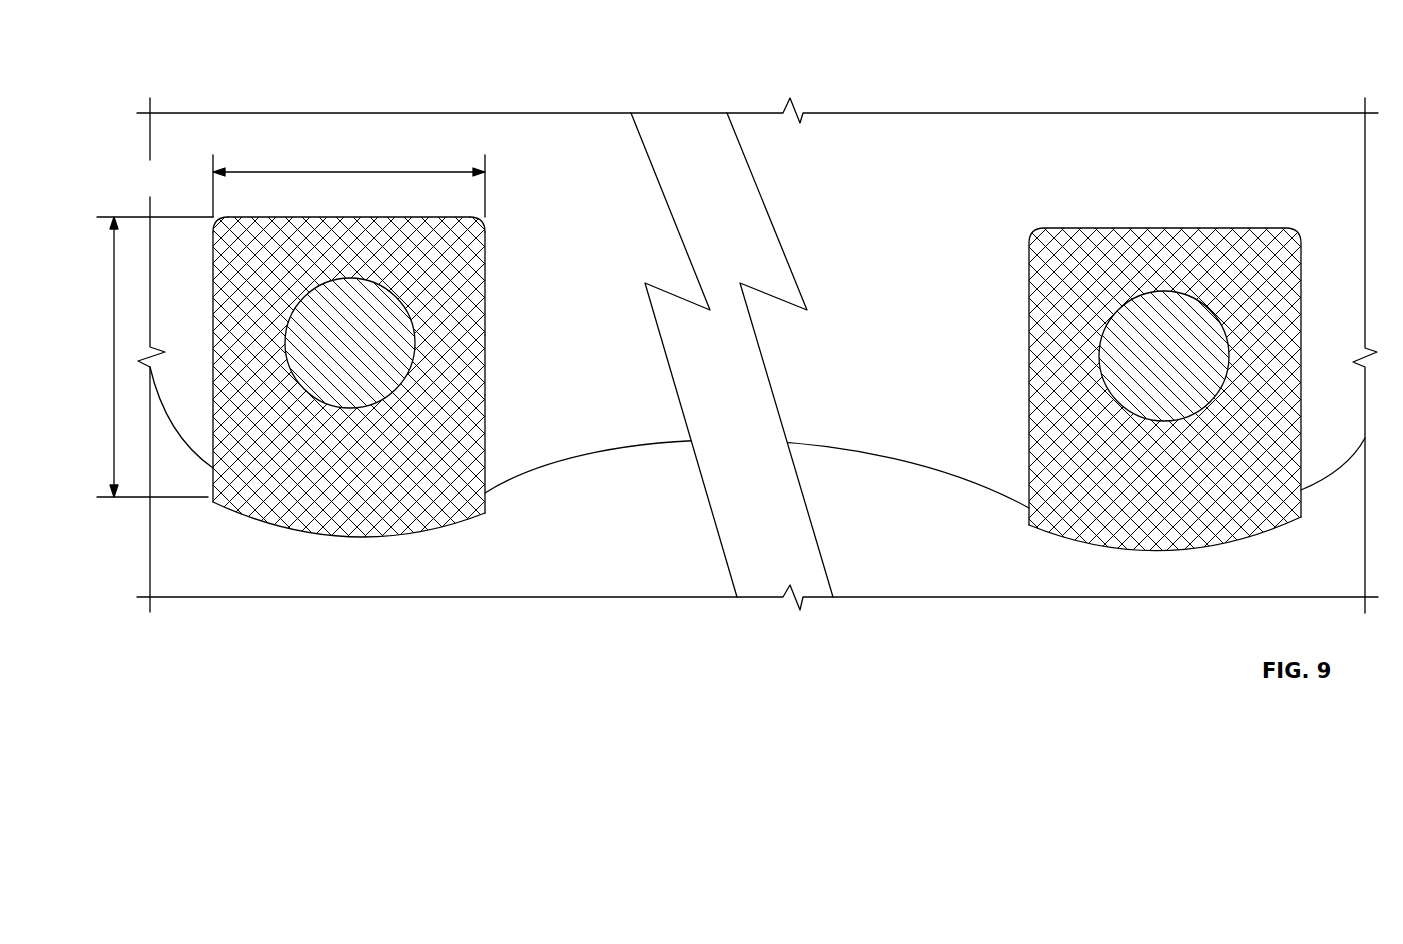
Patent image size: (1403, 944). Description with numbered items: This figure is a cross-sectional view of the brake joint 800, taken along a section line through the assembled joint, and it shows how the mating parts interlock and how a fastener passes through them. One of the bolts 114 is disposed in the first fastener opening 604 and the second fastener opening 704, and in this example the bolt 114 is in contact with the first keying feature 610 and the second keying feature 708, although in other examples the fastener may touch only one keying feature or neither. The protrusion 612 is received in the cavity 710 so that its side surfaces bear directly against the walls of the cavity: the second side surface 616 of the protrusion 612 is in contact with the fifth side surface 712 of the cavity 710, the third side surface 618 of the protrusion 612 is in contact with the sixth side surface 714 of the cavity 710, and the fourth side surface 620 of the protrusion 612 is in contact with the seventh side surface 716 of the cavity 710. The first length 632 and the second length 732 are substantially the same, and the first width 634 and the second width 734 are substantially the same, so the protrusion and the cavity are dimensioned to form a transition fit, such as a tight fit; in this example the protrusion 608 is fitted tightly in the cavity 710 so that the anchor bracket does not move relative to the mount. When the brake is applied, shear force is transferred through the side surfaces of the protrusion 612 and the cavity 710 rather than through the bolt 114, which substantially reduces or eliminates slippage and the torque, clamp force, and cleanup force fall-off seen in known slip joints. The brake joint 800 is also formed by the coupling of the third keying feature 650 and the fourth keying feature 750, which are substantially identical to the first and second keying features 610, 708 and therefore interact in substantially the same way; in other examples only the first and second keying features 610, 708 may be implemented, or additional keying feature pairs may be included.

The brake joint 800 is at (1212, 78).
The first width 634 is at (240, 172).
The second width 734 is at (349, 175).
The third side surface 618 is at (318, 217).
The sixth side surface 714 is at (349, 197).
The second side surface 616 is at (211, 241).
The fifth side surface 712 is at (191, 200).
The first length 632 is at (114, 253).
The second length 732 is at (114, 298).
The bolt 114 is at (310, 318).
The first fastener opening 604 is at (440, 280).
The second fastener opening 704 is at (388, 332).
The protrusion 608 is at (485, 307).
The first keying feature 610 is at (542, 283).
The fourth side surface 620 is at (485, 357).
The seventh side surface 716 is at (542, 366).
The protrusion 612 is at (485, 425).
The second keying feature 708 is at (349, 536).
The cavity 710 is at (349, 548).
The third keying feature 650 is at (1241, 545).
The fourth keying feature 750 is at (1191, 558).